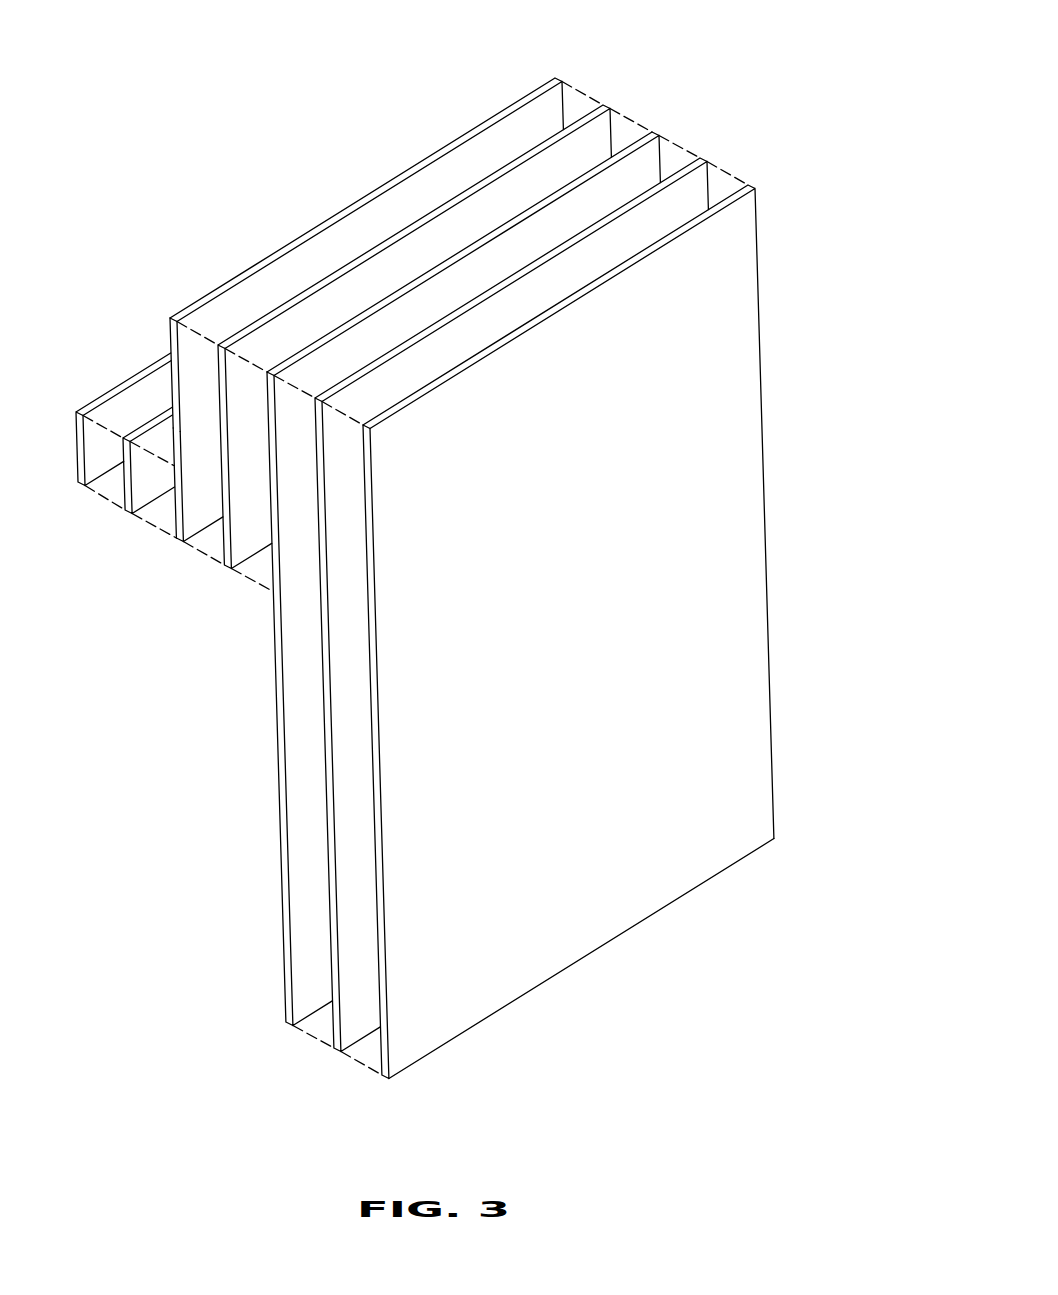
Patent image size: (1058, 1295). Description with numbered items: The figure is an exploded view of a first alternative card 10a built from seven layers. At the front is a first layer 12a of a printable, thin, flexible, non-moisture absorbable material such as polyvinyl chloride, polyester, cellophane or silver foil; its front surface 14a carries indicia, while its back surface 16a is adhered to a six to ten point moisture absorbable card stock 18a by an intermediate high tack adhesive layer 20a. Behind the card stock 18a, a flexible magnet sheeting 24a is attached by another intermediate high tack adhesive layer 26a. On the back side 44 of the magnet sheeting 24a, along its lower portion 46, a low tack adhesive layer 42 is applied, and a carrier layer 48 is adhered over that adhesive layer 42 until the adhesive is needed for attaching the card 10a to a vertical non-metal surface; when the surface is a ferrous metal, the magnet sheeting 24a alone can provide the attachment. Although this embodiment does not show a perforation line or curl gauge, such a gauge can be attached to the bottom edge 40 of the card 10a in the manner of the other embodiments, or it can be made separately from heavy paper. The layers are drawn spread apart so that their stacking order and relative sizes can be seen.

The first alternative card 10a is at (420, 562).
The first layer 12a is at (514, 651).
The front surface 14a is at (713, 420).
The back surface 16a is at (374, 795).
The card stock 18a is at (287, 1023).
The intermediate high tack adhesive layer 20a is at (335, 1050).
The flexible magnet sheeting 24a is at (317, 345).
The intermediate high tack adhesive layer 26a is at (225, 566).
The bottom edge 40 is at (610, 938).
The low tack adhesive layer 42 is at (126, 511).
The back side 44 is at (170, 387).
The lower portion 46 is at (175, 517).
The carrier layer 48 is at (78, 483).